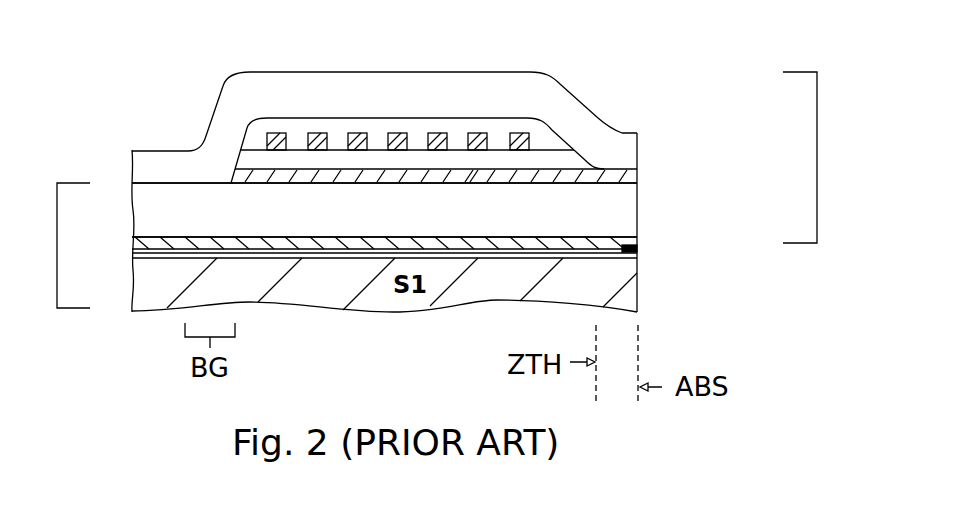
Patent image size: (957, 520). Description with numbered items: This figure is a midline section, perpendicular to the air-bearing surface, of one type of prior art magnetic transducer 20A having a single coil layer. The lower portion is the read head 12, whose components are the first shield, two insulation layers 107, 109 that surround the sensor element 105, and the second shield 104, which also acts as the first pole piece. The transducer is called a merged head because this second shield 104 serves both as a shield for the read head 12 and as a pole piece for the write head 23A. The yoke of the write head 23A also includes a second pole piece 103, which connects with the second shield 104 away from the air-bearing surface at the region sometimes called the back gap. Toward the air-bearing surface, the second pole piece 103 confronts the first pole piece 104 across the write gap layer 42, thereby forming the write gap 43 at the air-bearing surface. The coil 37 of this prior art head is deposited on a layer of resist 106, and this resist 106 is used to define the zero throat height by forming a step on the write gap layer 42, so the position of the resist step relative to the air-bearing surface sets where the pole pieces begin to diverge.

The magnetic transducer 20A is at (358, 53).
The read head 12 is at (57, 247).
The write head 23A is at (817, 157).
The second pole piece 103 is at (507, 88).
The coil 37 is at (267, 135).
The layer of resist 106 is at (248, 162).
The write gap 43 is at (637, 177).
The write gap layer 42 is at (485, 178).
The second shield 104 is at (612, 212).
The insulation layer 109 is at (157, 240).
The sensor element 105 is at (637, 248).
The insulation layer 107 is at (133, 255).